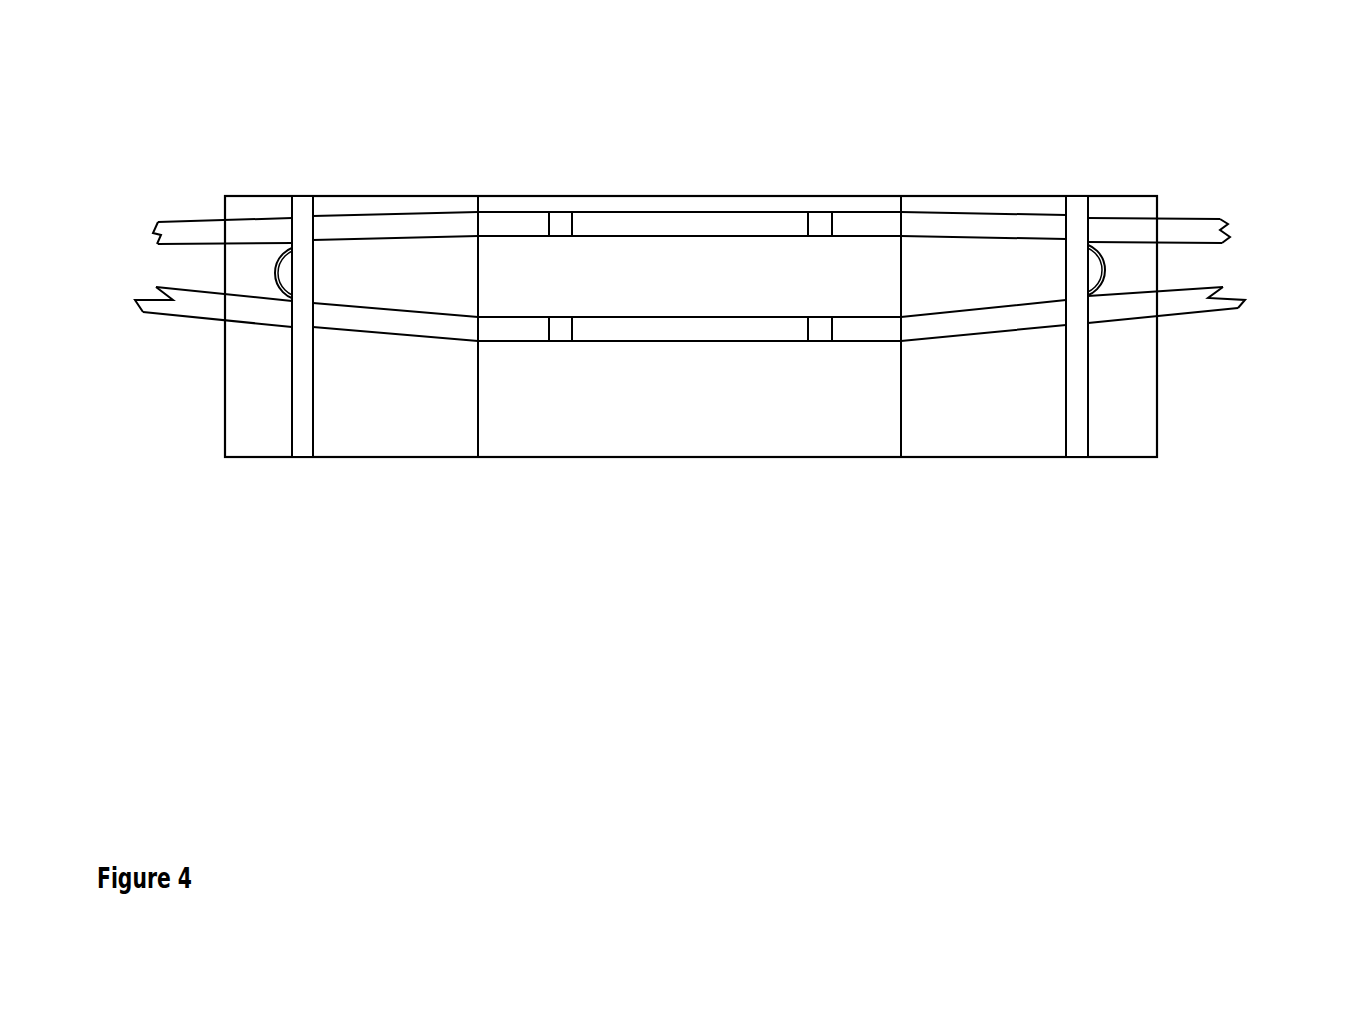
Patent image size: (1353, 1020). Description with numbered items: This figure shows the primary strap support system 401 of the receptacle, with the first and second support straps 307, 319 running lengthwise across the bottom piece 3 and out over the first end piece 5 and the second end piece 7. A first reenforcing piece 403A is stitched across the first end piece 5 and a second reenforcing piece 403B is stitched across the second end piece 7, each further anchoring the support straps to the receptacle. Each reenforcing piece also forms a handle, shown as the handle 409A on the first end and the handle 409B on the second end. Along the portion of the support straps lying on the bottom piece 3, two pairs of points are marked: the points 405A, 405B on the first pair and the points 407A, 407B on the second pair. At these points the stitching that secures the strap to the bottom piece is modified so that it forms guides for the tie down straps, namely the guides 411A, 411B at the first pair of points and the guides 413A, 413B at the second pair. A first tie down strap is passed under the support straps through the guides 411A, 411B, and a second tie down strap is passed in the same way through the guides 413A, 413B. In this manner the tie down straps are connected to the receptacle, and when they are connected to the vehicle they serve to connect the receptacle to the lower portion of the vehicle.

The strap fastening assembly 401 is at (508, 94).
The bottom piece 3 is at (665, 417).
The first end piece 5 is at (373, 433).
The second end piece 7 is at (993, 435).
The upper strap 307 is at (873, 222).
The lower strap 319 is at (863, 342).
The first reenforcing piece 403A is at (302, 192).
The second reenforcing piece 403B is at (1080, 195).
The point 405A is at (560, 207).
The point 405B is at (563, 347).
The point 407A is at (818, 208).
The point 407B is at (817, 348).
The handle 409A is at (293, 250).
The handle 409B is at (1105, 273).
The guide 411A is at (557, 242).
The guide 411B is at (555, 310).
The guide 413A is at (818, 245).
The guide 413B is at (812, 308).